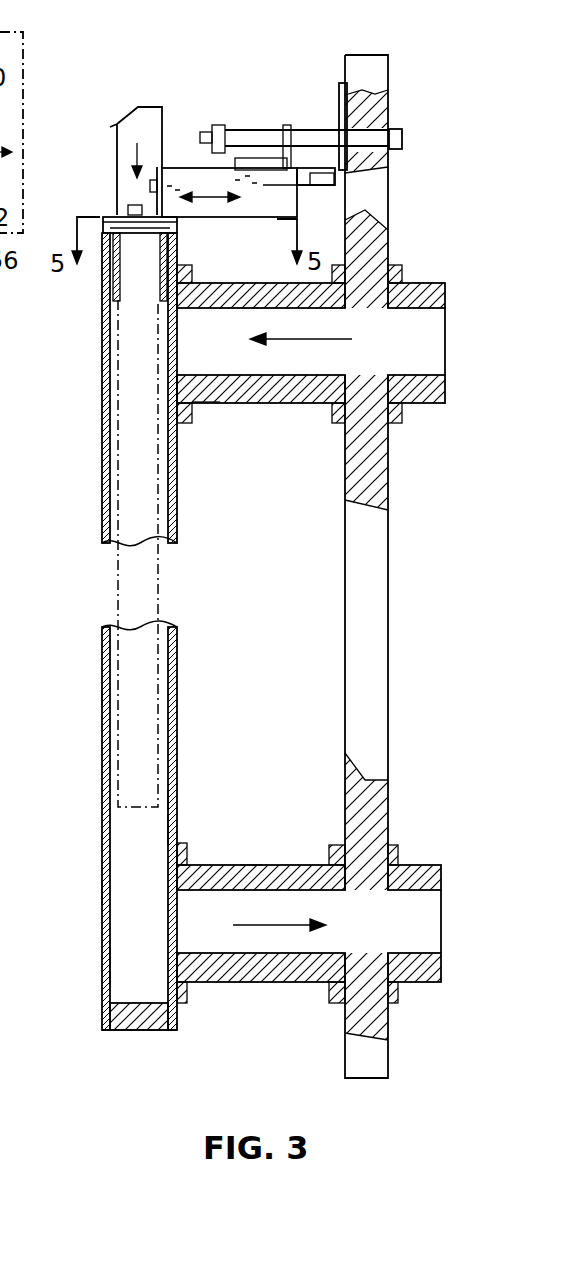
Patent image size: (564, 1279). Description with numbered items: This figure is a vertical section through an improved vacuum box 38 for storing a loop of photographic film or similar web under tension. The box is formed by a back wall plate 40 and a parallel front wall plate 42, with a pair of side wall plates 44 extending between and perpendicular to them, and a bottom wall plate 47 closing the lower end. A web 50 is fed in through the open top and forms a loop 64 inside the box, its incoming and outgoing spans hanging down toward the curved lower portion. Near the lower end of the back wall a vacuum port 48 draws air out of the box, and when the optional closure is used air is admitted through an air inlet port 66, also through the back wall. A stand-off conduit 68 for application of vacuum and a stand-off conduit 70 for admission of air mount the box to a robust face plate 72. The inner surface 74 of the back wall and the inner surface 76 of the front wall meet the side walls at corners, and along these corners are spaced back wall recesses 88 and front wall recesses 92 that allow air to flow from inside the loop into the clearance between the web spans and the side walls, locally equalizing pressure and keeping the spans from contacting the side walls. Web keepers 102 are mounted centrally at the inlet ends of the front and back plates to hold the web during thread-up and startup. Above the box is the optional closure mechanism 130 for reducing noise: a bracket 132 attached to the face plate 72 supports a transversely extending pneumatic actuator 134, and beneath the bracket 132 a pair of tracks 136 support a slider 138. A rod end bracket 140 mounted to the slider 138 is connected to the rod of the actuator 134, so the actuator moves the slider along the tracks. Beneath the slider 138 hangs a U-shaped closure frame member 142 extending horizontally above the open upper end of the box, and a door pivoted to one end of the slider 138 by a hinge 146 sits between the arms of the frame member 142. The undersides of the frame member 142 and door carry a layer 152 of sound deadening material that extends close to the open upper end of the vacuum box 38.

The vacuum box 38 is at (199, 1028).
The back wall plate 40 is at (173, 803).
The front wall plate 42 is at (100, 903).
The side wall plate 44 is at (135, 953).
The bottom wall plate 47 is at (128, 1030).
The vacuum port 48 is at (405, 940).
The web 50 is at (137, 120).
The loop 64 is at (119, 328).
The air inlet port 66 is at (422, 355).
The stand-off conduit 68 is at (262, 865).
The stand-off conduit 70 is at (220, 403).
The face plate 72 is at (385, 638).
The inner surface of back wall 74 is at (172, 842).
The inner surface of front wall 76 is at (108, 971).
The back wall recess 88 is at (176, 668).
The front wall recess 92 is at (102, 697).
The web keeper 102 is at (157, 270).
The closure mechanism 130 is at (317, 105).
The bracket 132 is at (342, 83).
The pneumatic actuator 134 is at (393, 138).
The track 136 is at (272, 197).
The slider 138 is at (198, 200).
The rod end bracket 140 is at (218, 125).
The U-shaped closure frame member 142 is at (180, 220).
The hinge 146 is at (155, 213).
The layer of sound deadening material 152 is at (103, 222).